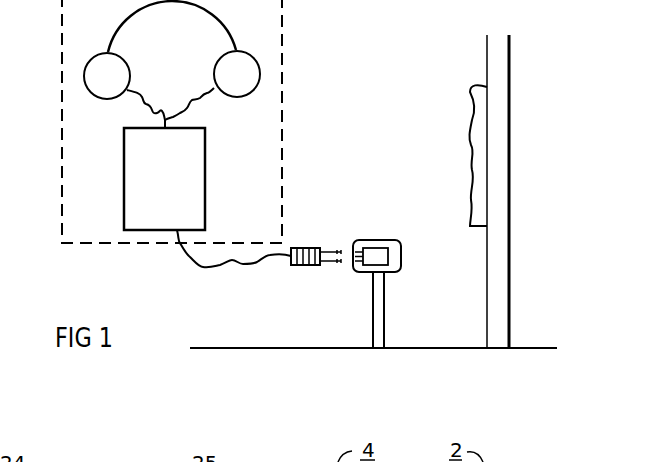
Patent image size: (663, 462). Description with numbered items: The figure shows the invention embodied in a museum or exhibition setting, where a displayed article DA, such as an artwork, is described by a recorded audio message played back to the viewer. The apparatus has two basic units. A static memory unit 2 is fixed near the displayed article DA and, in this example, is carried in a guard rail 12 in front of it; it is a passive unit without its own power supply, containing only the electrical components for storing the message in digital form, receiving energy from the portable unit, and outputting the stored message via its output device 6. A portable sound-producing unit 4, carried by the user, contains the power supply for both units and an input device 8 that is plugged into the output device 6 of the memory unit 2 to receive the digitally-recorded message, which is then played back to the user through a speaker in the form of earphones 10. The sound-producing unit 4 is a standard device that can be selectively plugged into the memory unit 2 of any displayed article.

The static memory unit 2 is at (377, 247).
The portable sound-producing unit 4 is at (87, 244).
The output device 6 is at (362, 247).
The input device 8 is at (340, 251).
The earphones 10 is at (225, 25).
The guard rail 12 is at (377, 295).
The displayed article DA is at (470, 139).